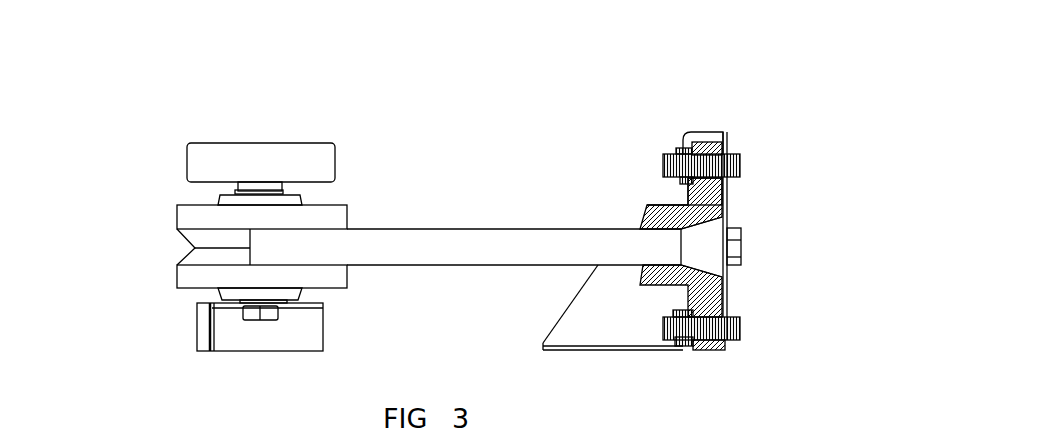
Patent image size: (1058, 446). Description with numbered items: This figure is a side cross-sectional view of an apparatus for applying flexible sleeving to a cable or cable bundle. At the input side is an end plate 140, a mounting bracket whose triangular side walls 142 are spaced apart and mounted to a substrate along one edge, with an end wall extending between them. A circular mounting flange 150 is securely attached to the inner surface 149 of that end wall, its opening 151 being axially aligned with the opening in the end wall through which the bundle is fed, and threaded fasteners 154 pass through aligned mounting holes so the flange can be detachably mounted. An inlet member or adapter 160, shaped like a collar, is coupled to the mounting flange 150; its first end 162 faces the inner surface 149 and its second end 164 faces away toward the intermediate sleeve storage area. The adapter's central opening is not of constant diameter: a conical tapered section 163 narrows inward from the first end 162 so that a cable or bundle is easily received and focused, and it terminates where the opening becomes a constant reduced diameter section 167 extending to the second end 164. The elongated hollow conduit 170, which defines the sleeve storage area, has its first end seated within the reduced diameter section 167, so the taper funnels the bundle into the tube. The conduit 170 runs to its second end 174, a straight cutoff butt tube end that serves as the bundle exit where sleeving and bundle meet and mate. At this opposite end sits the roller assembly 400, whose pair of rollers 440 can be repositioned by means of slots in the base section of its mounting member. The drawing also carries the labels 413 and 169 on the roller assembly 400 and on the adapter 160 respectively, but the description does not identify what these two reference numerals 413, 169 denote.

The roller assembly 400 is at (225, 140).
The rollers 440 is at (173, 270).
The notch 413 is at (203, 243).
The second end 174 is at (250, 237).
The elongated conduit 170 is at (387, 230).
The side walls 142 is at (583, 320).
The second end 164 is at (636, 219).
The reduced diameter section 167 is at (641, 211).
The opening 151 is at (724, 197).
The lower block 169 is at (727, 298).
The end plate 140 is at (688, 128).
The mounting flange 150 is at (667, 155).
The fasteners 154 is at (724, 156).
The first end 162 is at (728, 206).
The inner surface 149 is at (738, 292).
The tapered section 163 is at (728, 283).
The inlet member or adapter 160 is at (645, 290).